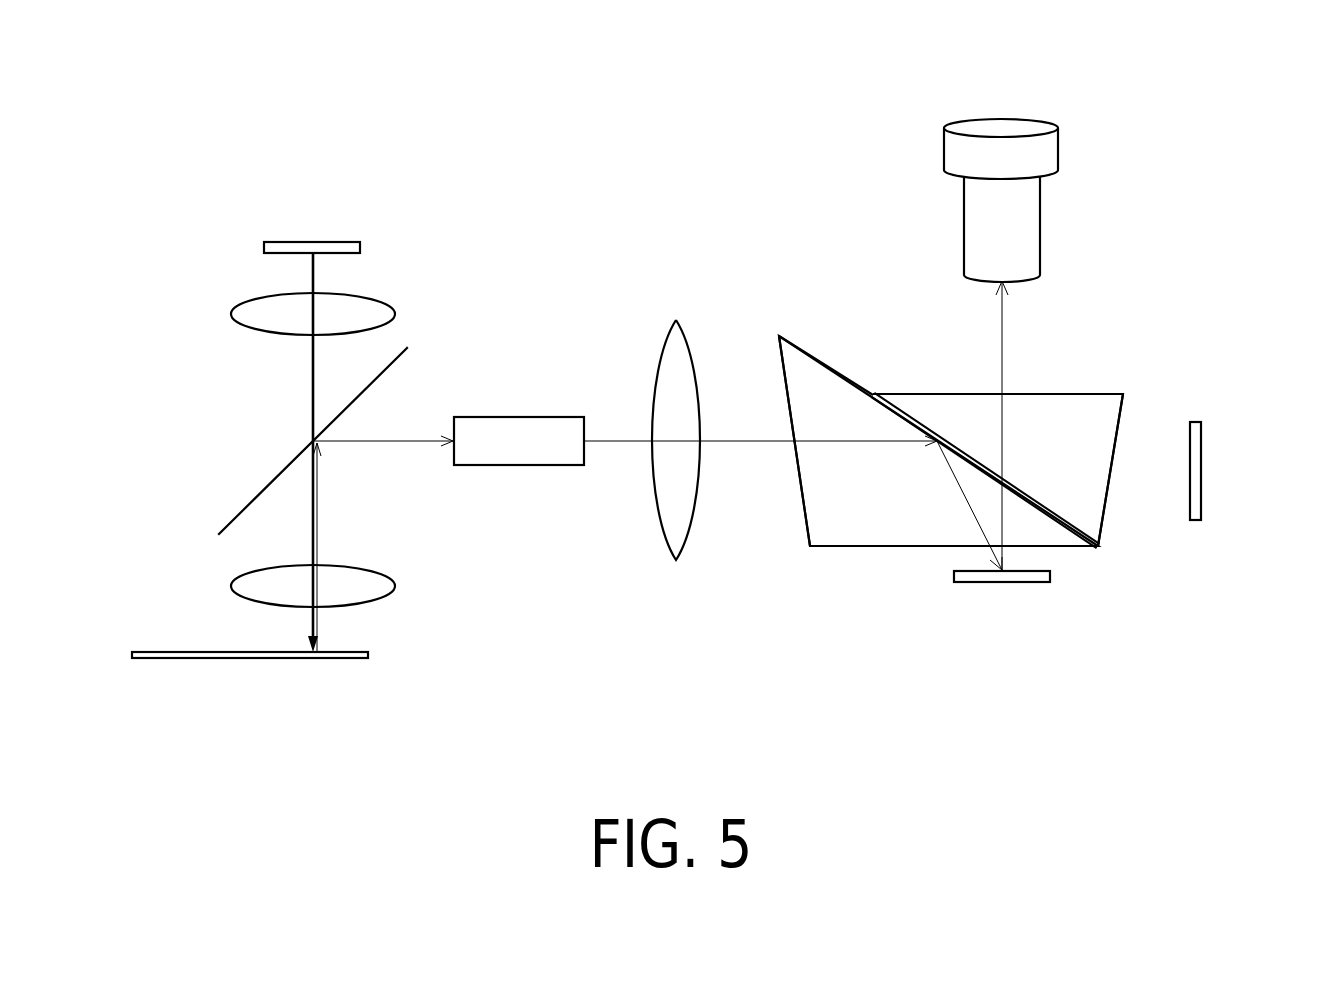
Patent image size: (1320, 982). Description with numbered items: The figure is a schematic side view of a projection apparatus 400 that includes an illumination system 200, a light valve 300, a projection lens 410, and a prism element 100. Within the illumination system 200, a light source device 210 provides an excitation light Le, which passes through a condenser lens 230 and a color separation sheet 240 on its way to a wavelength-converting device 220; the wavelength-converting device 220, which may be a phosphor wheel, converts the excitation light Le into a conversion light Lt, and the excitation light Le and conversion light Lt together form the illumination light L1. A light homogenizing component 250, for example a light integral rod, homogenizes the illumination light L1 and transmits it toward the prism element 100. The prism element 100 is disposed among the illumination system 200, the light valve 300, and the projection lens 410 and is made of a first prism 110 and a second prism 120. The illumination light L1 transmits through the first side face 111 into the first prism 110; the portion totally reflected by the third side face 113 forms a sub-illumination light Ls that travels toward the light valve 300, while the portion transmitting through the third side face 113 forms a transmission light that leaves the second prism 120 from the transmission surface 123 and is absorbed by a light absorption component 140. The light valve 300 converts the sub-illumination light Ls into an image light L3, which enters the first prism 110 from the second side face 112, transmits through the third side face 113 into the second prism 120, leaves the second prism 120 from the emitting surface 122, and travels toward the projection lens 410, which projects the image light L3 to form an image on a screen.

The projection apparatus 400 is at (191, 80).
The illumination system 200 is at (222, 265).
The light source device 210 is at (333, 250).
The wavelength-converting device 220 is at (262, 655).
The condenser lens 230 is at (382, 313).
The color separation sheet 240 is at (397, 358).
The light homogenizing component 250 is at (520, 452).
The prism element 100 is at (1123, 413).
The first prism 110 is at (910, 476).
The first side face 111 is at (802, 515).
The second side face 112 is at (868, 548).
The third side face 113 is at (902, 408).
The second prism 120 is at (1025, 459).
The emitting surface 122 is at (1093, 394).
The transmission surface 123 is at (1108, 510).
The light absorption component 140 is at (1195, 465).
The light valve 300 is at (1022, 582).
The projection lens 410 is at (1027, 213).
The excitation light Le is at (310, 389).
The conversion light Lt is at (318, 517).
The illumination light L1 is at (748, 440).
The image light L3 is at (1002, 330).
The sub-illumination light Ls is at (970, 507).